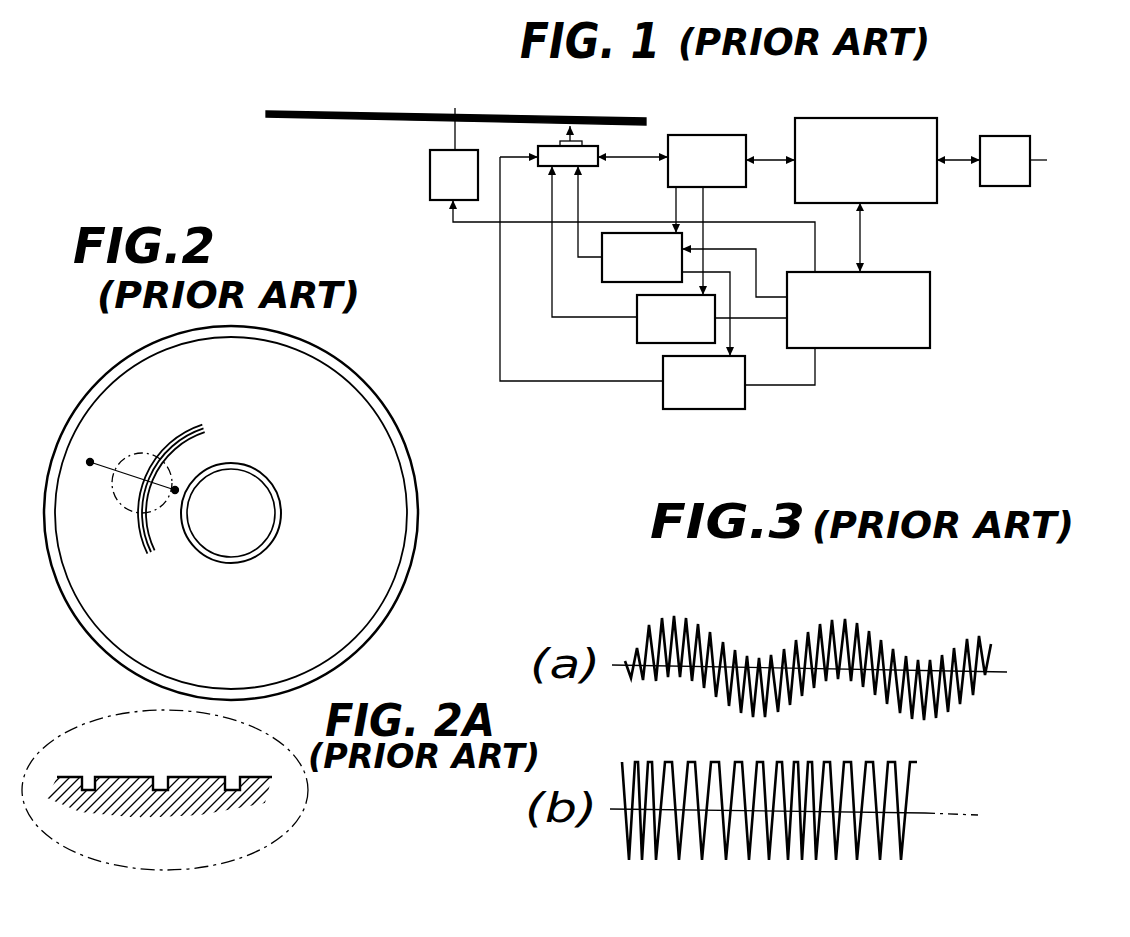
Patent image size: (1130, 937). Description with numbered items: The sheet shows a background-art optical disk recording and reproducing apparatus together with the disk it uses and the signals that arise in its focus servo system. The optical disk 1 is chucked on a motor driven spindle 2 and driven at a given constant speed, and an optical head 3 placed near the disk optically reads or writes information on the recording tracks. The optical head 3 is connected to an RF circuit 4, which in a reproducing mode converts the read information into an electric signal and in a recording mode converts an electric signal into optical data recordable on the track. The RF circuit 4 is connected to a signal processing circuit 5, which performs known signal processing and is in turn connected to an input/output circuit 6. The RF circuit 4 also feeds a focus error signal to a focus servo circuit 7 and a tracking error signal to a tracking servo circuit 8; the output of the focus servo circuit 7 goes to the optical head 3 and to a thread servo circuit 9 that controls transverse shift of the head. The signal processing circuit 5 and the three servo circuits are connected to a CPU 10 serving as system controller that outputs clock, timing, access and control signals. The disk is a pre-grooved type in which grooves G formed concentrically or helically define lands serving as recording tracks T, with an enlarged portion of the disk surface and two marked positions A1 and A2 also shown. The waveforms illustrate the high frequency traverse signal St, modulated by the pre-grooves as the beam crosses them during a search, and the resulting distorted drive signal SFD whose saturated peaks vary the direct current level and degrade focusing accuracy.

In FIG. 1, the optical disk 1 is at (600, 111).
In FIG. 2, the optical disk 1 is at (363, 407).
In FIG. 1, the spindle 2 is at (430, 183).
In FIG. 1, the optical head 3 is at (598, 165).
In FIG. 1, the RF circuit 4 is at (718, 135).
In FIG. 1, the signal processing circuit 5 is at (860, 118).
In FIG. 1, the input/output circuit 6 is at (994, 136).
In FIG. 1, the focus servo circuit 7 is at (602, 278).
In FIG. 1, the tracking servo circuit 8 is at (637, 338).
In FIG. 1, the thread servo circuit 9 is at (663, 400).
In FIG. 1, the CPU 10 is at (887, 348).
In FIG. 2, the track position A1 is at (185, 474).
In FIG. 2, the track position A2 is at (125, 463).
In FIG. 2A, the recording track T is at (144, 777).
In FIG. 2A, the pre-groove G is at (89, 790).
In FIG. 3, the traverse signal St is at (940, 642).
In FIG. 3, the drive signal SFD is at (903, 763).